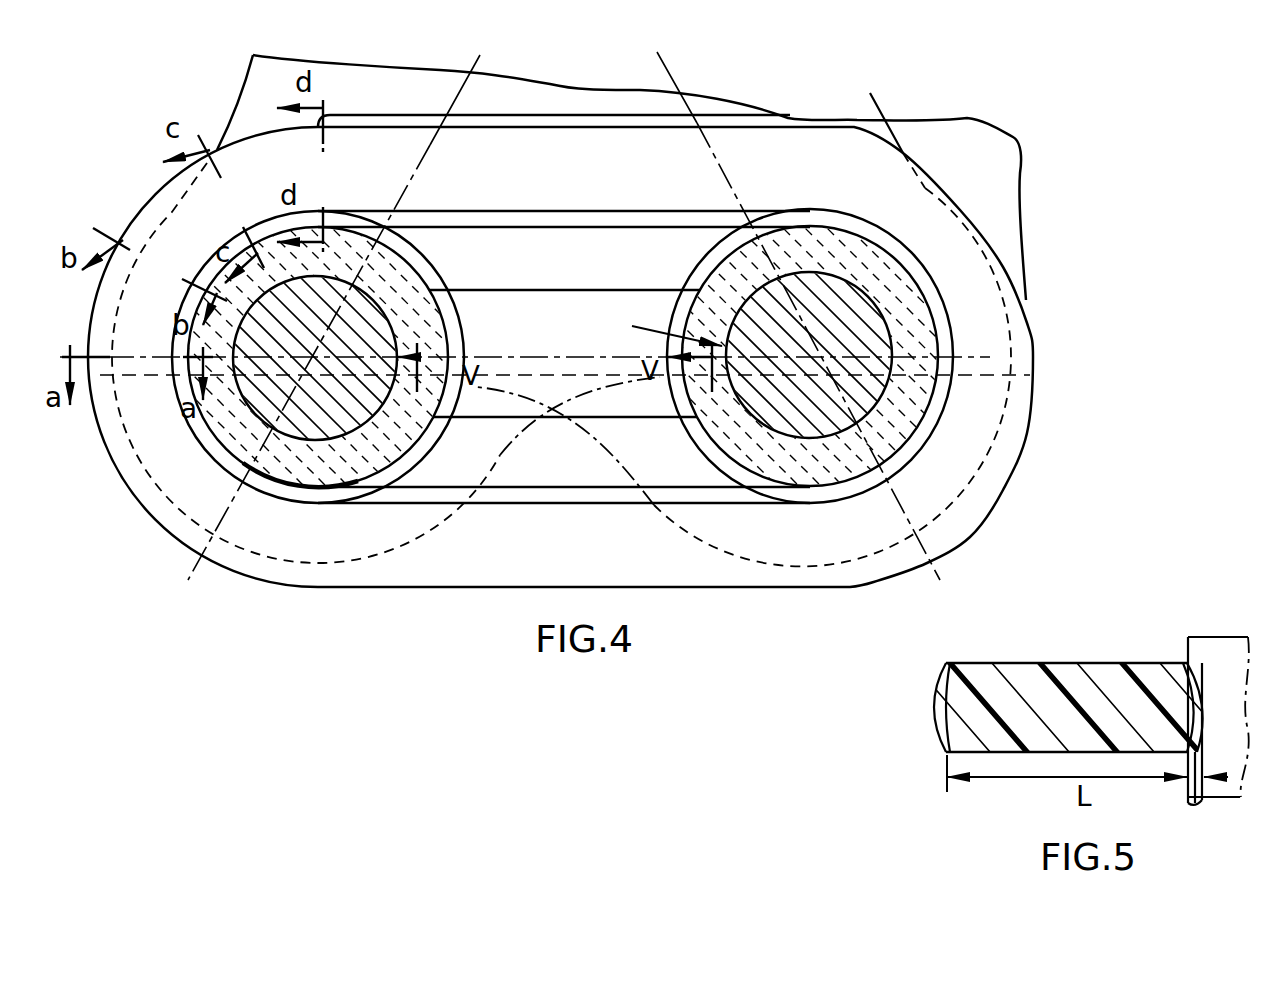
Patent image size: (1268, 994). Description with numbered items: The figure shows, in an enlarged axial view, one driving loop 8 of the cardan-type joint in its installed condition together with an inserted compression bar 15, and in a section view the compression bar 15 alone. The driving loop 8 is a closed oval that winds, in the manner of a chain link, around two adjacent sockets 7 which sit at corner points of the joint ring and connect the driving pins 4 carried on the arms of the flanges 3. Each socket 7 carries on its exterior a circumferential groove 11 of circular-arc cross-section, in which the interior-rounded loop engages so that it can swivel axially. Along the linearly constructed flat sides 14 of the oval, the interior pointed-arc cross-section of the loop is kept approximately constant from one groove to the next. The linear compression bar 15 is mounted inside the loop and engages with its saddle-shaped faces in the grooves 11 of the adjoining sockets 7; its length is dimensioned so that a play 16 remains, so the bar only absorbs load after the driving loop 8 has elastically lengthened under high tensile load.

In FIG. 4, the flange 3 is at (508, 452).
In FIG. 4, the driving pin 4 is at (340, 327).
In FIG. 4, the socket 7 is at (287, 470).
In FIG. 5, the socket 7 is at (1183, 645).
In FIG. 4, the driving loop 8 is at (567, 183).
In FIG. 4, the circumferential groove 11 is at (430, 283).
In FIG. 4, the flat side 14 is at (553, 112).
In FIG. 4, the compression bar 15 is at (572, 349).
In FIG. 5, the compression bar 15 is at (968, 705).
In FIG. 4, the play 16 is at (687, 333).
In FIG. 5, the play 16 is at (1188, 799).